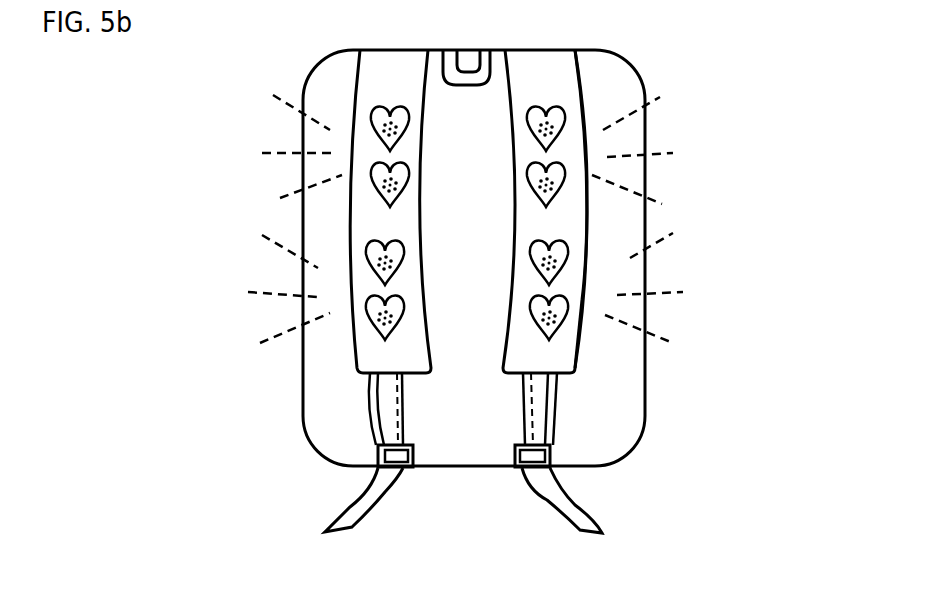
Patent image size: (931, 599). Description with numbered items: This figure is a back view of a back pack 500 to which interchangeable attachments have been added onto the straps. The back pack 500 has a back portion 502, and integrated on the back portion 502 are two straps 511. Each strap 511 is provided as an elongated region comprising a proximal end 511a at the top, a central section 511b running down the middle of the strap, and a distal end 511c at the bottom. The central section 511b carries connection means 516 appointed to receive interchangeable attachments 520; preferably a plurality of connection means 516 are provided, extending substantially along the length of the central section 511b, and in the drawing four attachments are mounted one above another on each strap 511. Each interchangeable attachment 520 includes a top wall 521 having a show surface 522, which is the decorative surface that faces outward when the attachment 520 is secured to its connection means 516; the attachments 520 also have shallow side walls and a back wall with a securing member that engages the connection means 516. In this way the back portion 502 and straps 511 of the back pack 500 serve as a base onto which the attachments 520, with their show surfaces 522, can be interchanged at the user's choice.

The back pack 500 is at (500, 196).
The back portion 502 is at (621, 200).
The straps 511 is at (585, 303).
The proximal end 511a is at (577, 88).
The central section 511b is at (588, 233).
The distal end 511c is at (562, 362).
The connection means 516 is at (378, 318).
The interchangeable attachments 520 is at (373, 115).
The top wall 521 is at (240, 175).
The show surface 522 is at (373, 170).